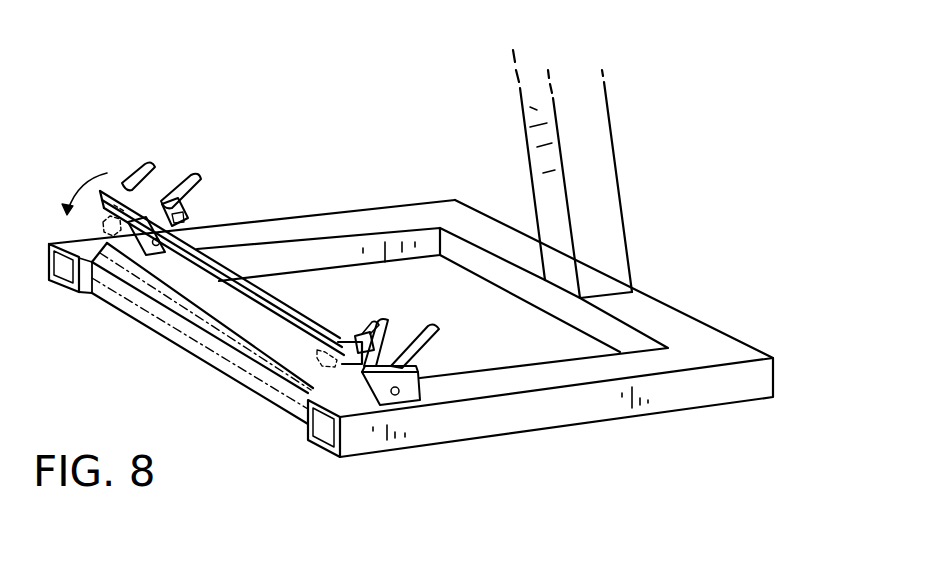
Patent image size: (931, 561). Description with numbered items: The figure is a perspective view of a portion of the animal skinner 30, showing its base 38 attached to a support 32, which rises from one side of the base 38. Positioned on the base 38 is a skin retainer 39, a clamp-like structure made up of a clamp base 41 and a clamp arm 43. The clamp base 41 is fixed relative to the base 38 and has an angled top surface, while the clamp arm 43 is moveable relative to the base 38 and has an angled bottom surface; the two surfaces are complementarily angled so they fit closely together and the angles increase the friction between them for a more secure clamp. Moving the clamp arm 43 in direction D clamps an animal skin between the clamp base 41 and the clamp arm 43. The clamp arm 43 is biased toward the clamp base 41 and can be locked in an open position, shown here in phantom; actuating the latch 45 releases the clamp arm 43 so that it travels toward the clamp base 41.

The animal skinner 30 is at (131, 100).
The support 32 is at (617, 167).
The base 38 is at (398, 205).
The skin retainer 39 is at (172, 158).
The clamp base 41 is at (177, 333).
The clamp arm 43 is at (297, 303).
The latch 45 is at (430, 351).